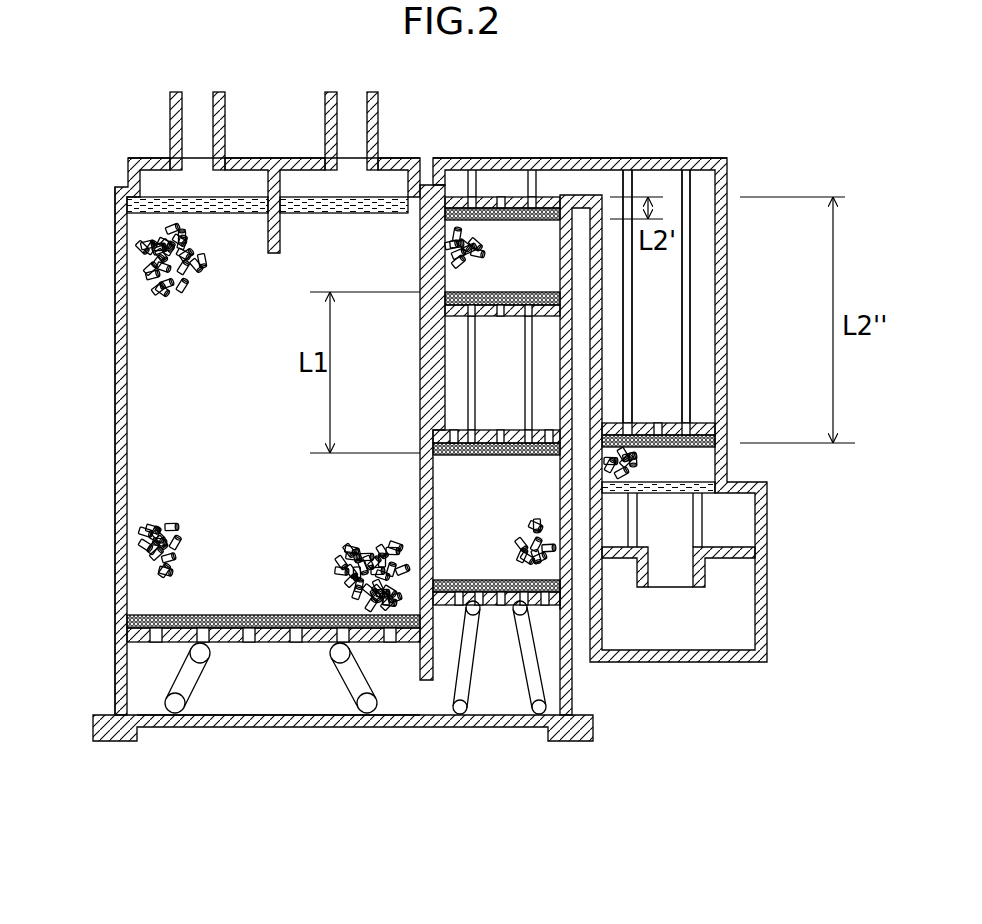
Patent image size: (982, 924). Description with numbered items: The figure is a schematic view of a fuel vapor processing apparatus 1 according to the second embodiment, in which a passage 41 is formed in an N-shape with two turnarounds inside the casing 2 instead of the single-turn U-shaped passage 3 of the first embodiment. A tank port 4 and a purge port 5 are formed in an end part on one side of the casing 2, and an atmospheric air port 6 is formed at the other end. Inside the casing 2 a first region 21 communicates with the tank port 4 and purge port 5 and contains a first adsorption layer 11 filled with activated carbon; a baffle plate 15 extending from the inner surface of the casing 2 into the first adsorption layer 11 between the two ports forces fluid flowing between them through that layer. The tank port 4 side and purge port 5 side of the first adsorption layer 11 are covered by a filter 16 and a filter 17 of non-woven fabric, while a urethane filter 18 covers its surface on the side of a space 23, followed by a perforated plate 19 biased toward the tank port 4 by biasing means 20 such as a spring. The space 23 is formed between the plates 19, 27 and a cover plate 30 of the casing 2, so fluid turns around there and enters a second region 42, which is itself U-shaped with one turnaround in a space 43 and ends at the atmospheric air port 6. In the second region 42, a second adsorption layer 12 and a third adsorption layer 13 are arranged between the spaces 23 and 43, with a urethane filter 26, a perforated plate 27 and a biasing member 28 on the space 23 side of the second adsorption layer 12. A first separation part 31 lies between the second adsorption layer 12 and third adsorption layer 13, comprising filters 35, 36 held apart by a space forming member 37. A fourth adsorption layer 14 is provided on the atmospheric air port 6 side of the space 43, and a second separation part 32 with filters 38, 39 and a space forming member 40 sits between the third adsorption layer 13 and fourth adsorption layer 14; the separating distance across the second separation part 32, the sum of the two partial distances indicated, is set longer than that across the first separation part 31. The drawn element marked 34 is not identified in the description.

The fuel vapor processing apparatus 1 is at (108, 185).
The casing 2 is at (115, 478).
The passage 3 is at (152, 426).
The tank port 4 is at (192, 128).
The purge port 5 is at (338, 120).
The atmospheric air port 6 is at (676, 567).
The first adsorption layer 11 is at (148, 348).
The second adsorption layer 12 is at (445, 508).
The third adsorption layer 13 is at (547, 228).
The fourth adsorption layer 14 is at (703, 462).
The baffle plate 15 is at (275, 242).
The filter 16 is at (203, 202).
The filter 17 is at (350, 200).
The filter 18 is at (222, 614).
The plate 19 is at (262, 640).
The biasing means 20 is at (172, 708).
The first region 21 is at (148, 600).
The space 23 is at (295, 696).
The filter 26 is at (503, 580).
The plate 27 is at (560, 597).
The biasing member 28 is at (530, 700).
The cover plate 30 is at (420, 728).
The first separation part 31 is at (460, 374).
The second separation part 32 is at (643, 188).
The filter screen 34 is at (707, 495).
The filter 35 is at (490, 456).
The filter 36 is at (447, 293).
The space forming member 37 is at (470, 337).
The filter 38 is at (493, 207).
The filter 39 is at (717, 432).
The space forming member 40 is at (533, 187).
The passage 41 is at (670, 347).
The second region 42 is at (700, 238).
The space 43 is at (462, 188).